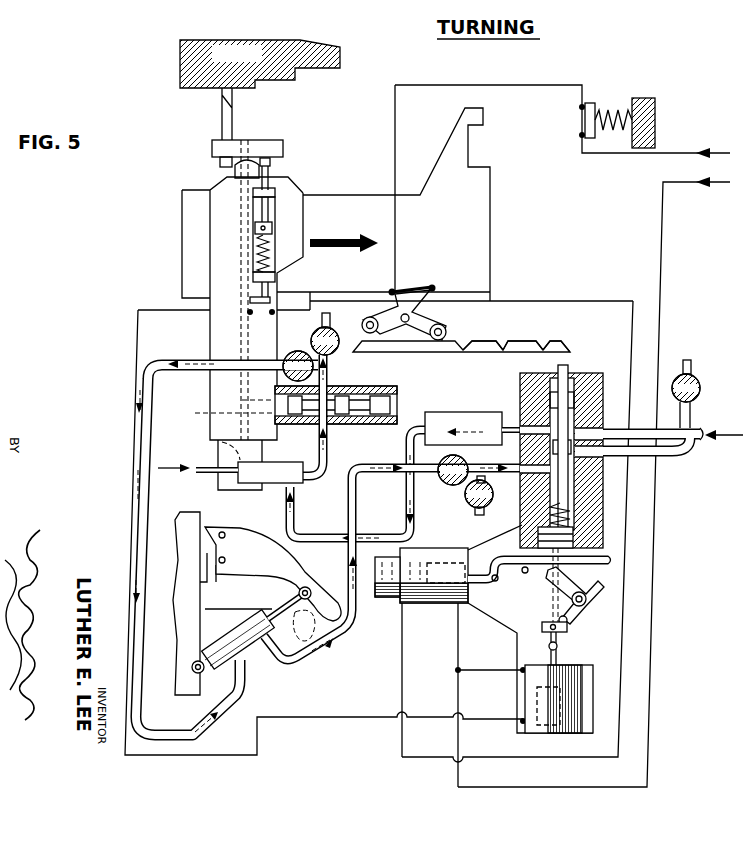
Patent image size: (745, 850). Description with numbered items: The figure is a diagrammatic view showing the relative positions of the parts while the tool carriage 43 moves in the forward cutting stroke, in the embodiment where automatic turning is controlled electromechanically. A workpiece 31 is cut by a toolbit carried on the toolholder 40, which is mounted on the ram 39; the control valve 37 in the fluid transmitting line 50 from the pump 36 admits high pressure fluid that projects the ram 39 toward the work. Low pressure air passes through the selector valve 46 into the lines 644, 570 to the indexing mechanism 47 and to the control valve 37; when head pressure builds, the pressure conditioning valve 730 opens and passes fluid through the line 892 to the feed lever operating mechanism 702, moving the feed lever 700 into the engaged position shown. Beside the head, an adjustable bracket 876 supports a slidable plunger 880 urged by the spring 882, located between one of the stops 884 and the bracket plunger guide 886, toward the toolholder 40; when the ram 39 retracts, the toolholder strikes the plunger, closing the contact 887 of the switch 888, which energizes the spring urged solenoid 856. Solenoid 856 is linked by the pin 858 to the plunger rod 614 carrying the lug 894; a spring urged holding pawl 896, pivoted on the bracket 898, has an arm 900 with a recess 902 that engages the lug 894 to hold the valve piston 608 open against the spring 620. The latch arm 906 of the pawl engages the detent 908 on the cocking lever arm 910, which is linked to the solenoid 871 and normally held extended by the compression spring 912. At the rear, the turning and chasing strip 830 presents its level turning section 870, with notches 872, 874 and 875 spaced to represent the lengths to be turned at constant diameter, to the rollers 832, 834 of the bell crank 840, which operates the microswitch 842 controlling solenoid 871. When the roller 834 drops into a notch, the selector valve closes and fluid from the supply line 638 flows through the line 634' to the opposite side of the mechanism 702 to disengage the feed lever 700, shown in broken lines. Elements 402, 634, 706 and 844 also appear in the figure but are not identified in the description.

The workpiece 31 is at (318, 70).
The toolholder 40 is at (286, 144).
The ram 39 is at (230, 170).
The slidable plunger 880 is at (275, 167).
The stop 884 is at (277, 193).
The adjustable bracket 876 is at (276, 211).
The bracket plunger guide 886 is at (273, 230).
The spring 882 is at (254, 245).
The contact 887 is at (250, 301).
The switch 888 is at (252, 314).
The ram housing 402 is at (234, 333).
The tool carriage 43 is at (375, 203).
The line 892 is at (170, 357).
The pressure conditioning valve 730 is at (345, 390).
The control valve 37 is at (278, 483).
The fluid transmitting line 50 is at (205, 474).
The pump 36 is at (190, 449).
The line 570 is at (404, 500).
The check valve 634 is at (394, 557).
The indexing mechanism 47 is at (467, 405).
The line 644 is at (510, 426).
The bell crank 840 is at (383, 307).
The microswitch 842 is at (412, 288).
The pivot 844 is at (412, 317).
The roller 832 is at (364, 327).
The roller 834 is at (446, 332).
The turning section 870 is at (528, 340).
The notch 872 is at (465, 350).
The notch 874 is at (503, 350).
The notch 875 is at (543, 350).
The turning and chasing strip 830 is at (572, 344).
The selector valve 46 is at (582, 370).
The valve piston 608 is at (600, 497).
The spring 620 is at (574, 515).
The supply line 638 is at (700, 429).
The solenoid 871 is at (438, 548).
The compression spring 912 is at (385, 598).
The cocking lever arm 910 is at (640, 547).
The detent 908 is at (610, 565).
The latch arm 906 is at (600, 584).
The spring urged holding pawl 896 is at (604, 599).
The arm 900 is at (567, 605).
The recess 902 is at (565, 620).
The lug 894 is at (570, 627).
The plunger rod 614 is at (564, 637).
The pin 858 is at (564, 648).
The solenoid 856 is at (583, 687).
The bracket 898 is at (597, 703).
The feed lever 700 is at (257, 559).
The feed lever operating mechanism 702 is at (248, 654).
The pivot 706 is at (199, 674).
The line 634' is at (356, 664).